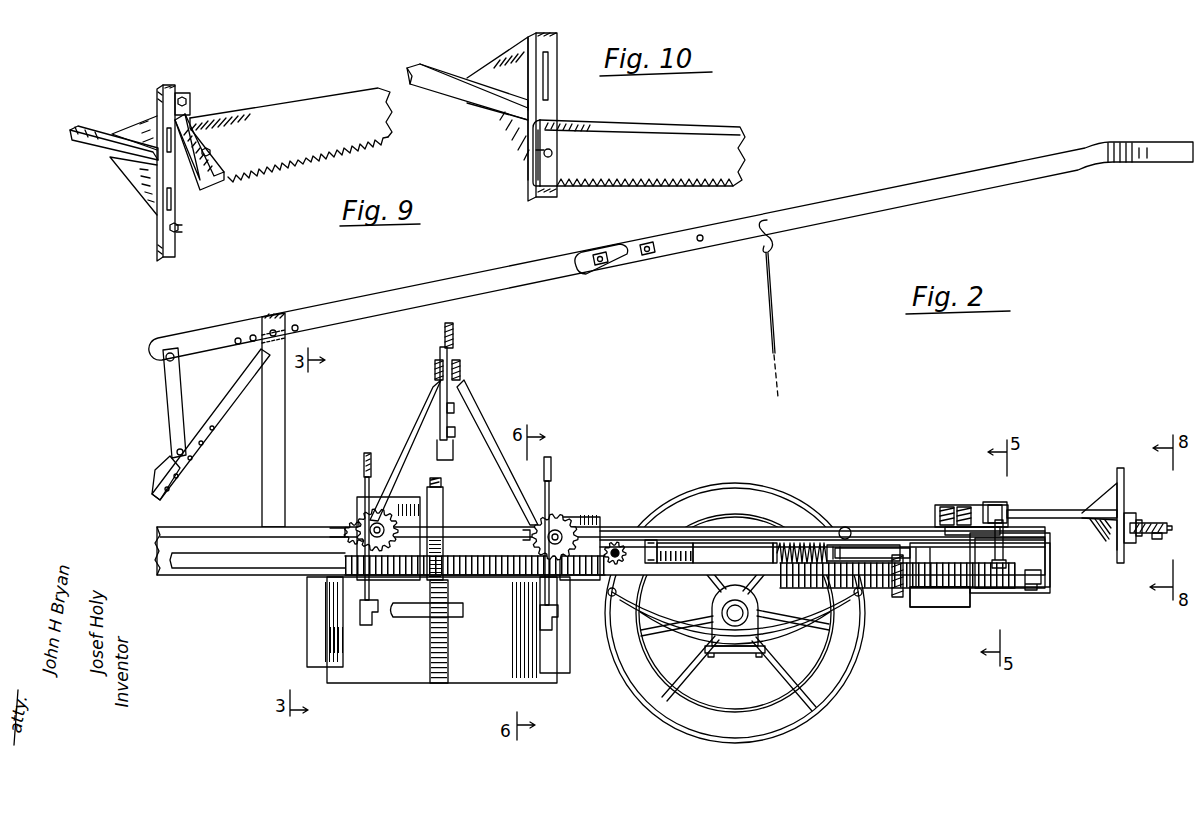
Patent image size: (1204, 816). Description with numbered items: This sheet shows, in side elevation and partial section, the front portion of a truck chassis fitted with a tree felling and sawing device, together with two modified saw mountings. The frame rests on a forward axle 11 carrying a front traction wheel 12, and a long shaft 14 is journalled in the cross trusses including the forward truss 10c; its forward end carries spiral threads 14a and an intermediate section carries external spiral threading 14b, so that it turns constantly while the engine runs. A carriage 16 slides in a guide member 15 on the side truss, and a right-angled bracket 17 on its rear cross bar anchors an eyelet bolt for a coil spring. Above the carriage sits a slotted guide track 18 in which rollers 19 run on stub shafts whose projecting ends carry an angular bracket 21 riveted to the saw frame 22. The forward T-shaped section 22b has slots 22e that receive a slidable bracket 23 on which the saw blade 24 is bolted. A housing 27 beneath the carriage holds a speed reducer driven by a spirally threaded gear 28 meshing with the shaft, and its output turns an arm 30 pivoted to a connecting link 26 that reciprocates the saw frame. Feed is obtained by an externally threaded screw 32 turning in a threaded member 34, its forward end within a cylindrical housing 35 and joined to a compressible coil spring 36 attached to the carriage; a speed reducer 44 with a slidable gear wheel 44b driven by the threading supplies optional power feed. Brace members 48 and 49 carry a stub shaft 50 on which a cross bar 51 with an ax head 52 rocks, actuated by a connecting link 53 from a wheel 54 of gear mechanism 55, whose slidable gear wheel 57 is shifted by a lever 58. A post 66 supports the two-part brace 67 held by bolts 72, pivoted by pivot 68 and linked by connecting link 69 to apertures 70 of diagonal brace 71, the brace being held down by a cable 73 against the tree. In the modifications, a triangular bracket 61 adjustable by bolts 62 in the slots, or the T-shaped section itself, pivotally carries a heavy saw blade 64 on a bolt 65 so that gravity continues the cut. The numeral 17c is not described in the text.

In FIG. 2, the forward truss 10c is at (1052, 562).
In FIG. 2, the forward axle 11 is at (762, 612).
In FIG. 2, the front traction wheel 12 is at (616, 664).
In FIG. 2, the shaft 14 is at (268, 555).
In FIG. 2, the spiral threads 14a is at (952, 608).
In FIG. 2, the external spiral threading 14b is at (510, 558).
In FIG. 2, the guide member 15 is at (774, 540).
In FIG. 2, the carriage 16 is at (836, 540).
In FIG. 2, the right-angled bracket 17 is at (868, 528).
In FIG. 2, the threaded rod 17c is at (860, 564).
In FIG. 2, the guide track 18 is at (936, 520).
In FIG. 2, the rollers 19 is at (962, 507).
In FIG. 2, the angular bracket 21 is at (994, 508).
In FIG. 2, the saw frame 22 is at (1036, 510).
In FIG. 9, the T-shaped section 22b is at (118, 150).
In FIG. 10, the T-shaped section 22b is at (525, 110).
In FIG. 2, the T-shaped section 22b is at (1118, 486).
In FIG. 9, the slots 22e is at (150, 128).
In FIG. 10, the slots 22e is at (548, 82).
In FIG. 2, the bracket 23 is at (1138, 536).
In FIG. 2, the saw blade 24 is at (1154, 522).
In FIG. 2, the connecting link 26 is at (1010, 530).
In FIG. 2, the housing 27 is at (926, 607).
In FIG. 2, the spirally threaded gear 28 is at (896, 600).
In FIG. 2, the arm 30 is at (975, 562).
In FIG. 2, the externally threaded screw 32 is at (672, 548).
In FIG. 2, the threaded member 34 is at (650, 540).
In FIG. 2, the cylindrical housing 35 is at (733, 552).
In FIG. 2, the compressible coil spring 36 is at (796, 543).
In FIG. 2, the speed reducer 44 is at (592, 530).
In FIG. 2, the gear wheel 44b is at (572, 510).
In FIG. 2, the brace member 48 is at (488, 412).
In FIG. 2, the brace member 49 is at (412, 418).
In FIG. 2, the stub shaft 50 is at (434, 370).
In FIG. 2, the cross bar 51 is at (458, 340).
In FIG. 2, the ax head 52 is at (452, 442).
In FIG. 2, the connecting link 53 is at (446, 500).
In FIG. 2, the wheel 54 is at (432, 478).
In FIG. 2, the gear mechanism 55 is at (390, 512).
In FIG. 2, the slidable gear wheel 57 is at (348, 524).
In FIG. 2, the lever 58 is at (364, 460).
In FIG. 9, the triangular bracket 61 is at (196, 104).
In FIG. 9, the bolts 62 is at (190, 92).
In FIG. 9, the saw blade 64 is at (310, 108).
In FIG. 10, the saw blade 64 is at (626, 137).
In FIG. 10, the bolt 65 is at (536, 163).
In FIG. 2, the post 66 is at (285, 412).
In FIG. 2, the brace 67 is at (380, 308).
In FIG. 2, the pivot 68 is at (280, 316).
In FIG. 2, the connecting link 69 is at (167, 404).
In FIG. 2, the apertures 70 is at (172, 480).
In FIG. 2, the diagonal brace 71 is at (218, 408).
In FIG. 2, the bolts 72 is at (606, 248).
In FIG. 2, the cable 73 is at (772, 310).